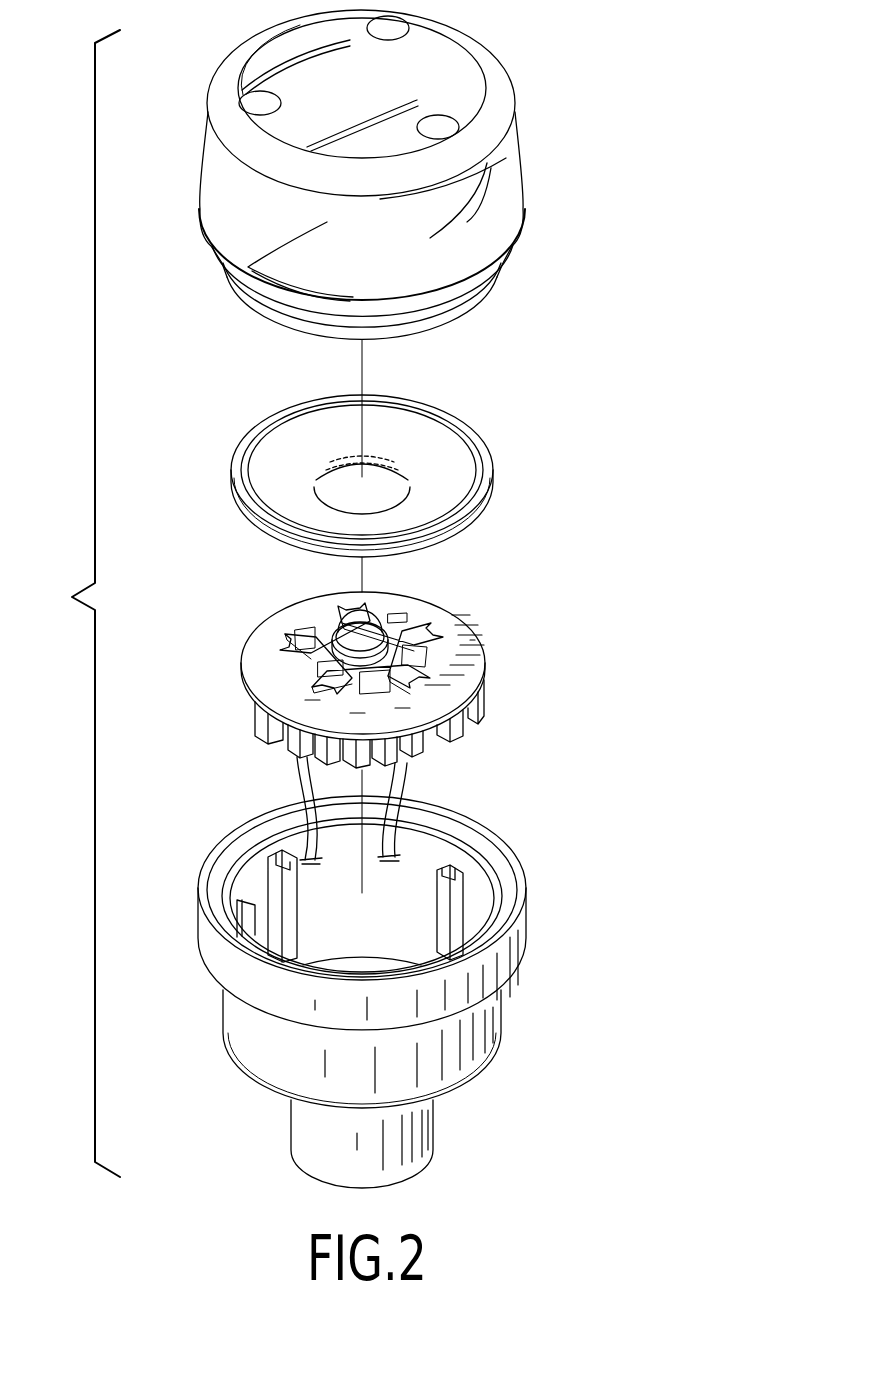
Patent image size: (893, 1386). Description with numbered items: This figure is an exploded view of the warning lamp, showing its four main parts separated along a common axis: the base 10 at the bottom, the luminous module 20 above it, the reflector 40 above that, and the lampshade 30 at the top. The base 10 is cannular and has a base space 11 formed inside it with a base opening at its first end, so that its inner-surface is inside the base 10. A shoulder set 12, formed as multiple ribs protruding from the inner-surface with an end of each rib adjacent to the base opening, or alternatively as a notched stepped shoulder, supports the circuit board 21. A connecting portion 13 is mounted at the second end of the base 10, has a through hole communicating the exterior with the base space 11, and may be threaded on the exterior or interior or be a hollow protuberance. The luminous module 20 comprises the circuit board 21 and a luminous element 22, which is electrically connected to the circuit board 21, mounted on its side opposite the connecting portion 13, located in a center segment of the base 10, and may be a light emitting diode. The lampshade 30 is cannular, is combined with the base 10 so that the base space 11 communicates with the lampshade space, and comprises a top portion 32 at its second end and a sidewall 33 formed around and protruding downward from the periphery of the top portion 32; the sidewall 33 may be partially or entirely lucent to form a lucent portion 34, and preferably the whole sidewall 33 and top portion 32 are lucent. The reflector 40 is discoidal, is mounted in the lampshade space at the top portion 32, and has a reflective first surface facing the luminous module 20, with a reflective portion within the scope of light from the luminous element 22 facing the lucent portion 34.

The base 10 is at (410, 979).
The base space 11 is at (415, 858).
The shoulder set 12 is at (455, 870).
The connecting portion 13 is at (420, 1133).
The luminous module 20 is at (412, 714).
The circuit board 21 is at (464, 638).
The luminous element 22 is at (365, 622).
The lampshade 30 is at (384, 173).
The top portion 32 is at (430, 62).
The sidewall 33 is at (513, 182).
The lucent portion 34 is at (217, 173).
The reflector 40 is at (507, 443).